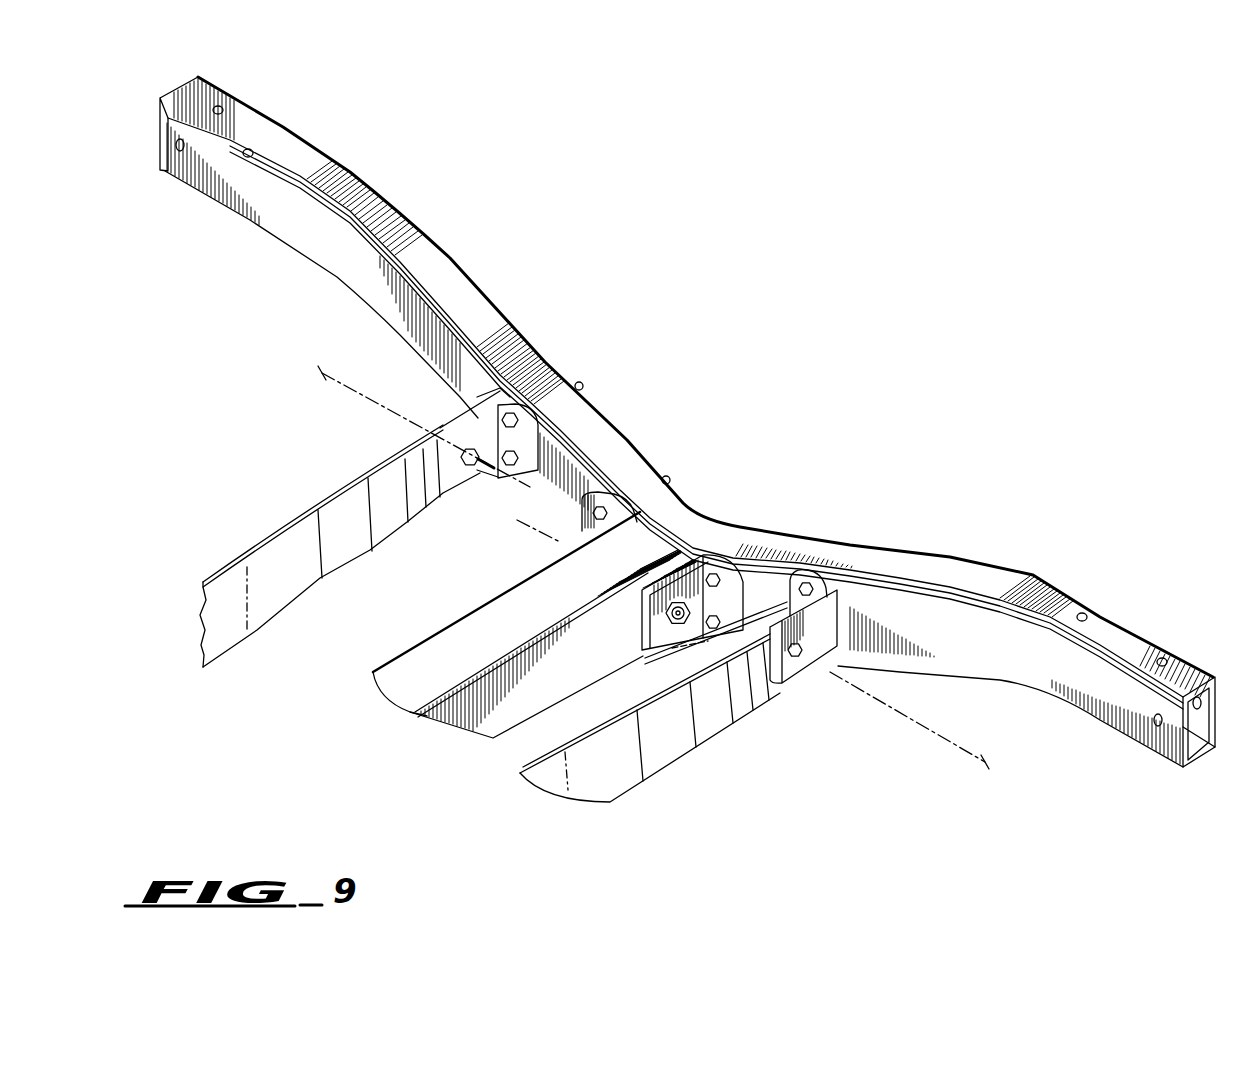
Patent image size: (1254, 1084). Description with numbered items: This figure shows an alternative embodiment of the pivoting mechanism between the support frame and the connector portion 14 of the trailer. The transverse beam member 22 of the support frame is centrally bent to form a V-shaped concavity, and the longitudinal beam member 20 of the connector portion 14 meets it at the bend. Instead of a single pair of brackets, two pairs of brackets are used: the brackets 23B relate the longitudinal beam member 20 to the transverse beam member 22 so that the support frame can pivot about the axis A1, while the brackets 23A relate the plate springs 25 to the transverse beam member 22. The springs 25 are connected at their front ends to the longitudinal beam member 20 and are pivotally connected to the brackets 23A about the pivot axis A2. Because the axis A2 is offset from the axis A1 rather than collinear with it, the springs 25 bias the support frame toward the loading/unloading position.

The connector portion 14 is at (362, 694).
The longitudinal beam member 20 is at (497, 686).
The transverse beam member 22 is at (973, 630).
The brackets 23A is at (523, 440).
The brackets 23B is at (588, 487).
The springs 25 is at (215, 612).
The axis A1 is at (678, 659).
The pivot axis A2 is at (318, 376).